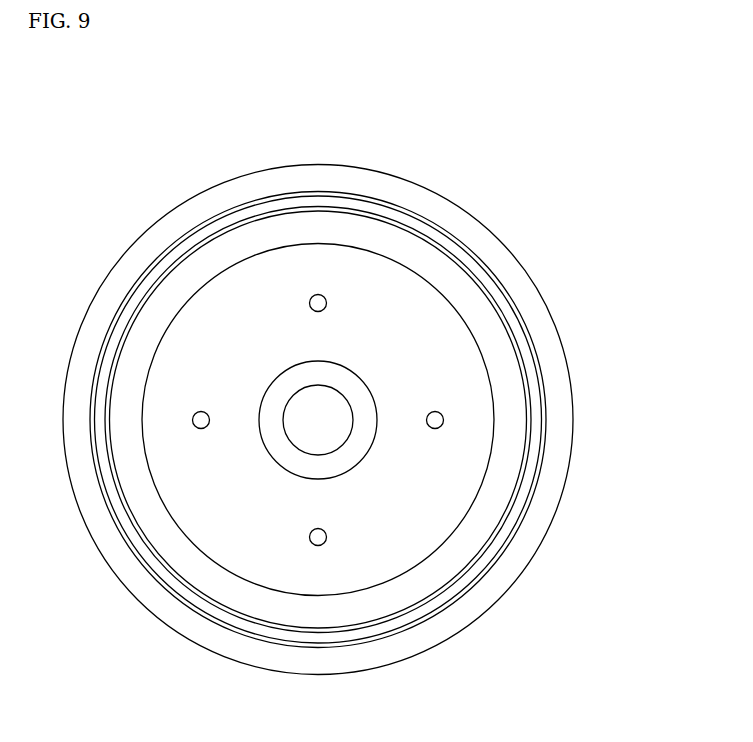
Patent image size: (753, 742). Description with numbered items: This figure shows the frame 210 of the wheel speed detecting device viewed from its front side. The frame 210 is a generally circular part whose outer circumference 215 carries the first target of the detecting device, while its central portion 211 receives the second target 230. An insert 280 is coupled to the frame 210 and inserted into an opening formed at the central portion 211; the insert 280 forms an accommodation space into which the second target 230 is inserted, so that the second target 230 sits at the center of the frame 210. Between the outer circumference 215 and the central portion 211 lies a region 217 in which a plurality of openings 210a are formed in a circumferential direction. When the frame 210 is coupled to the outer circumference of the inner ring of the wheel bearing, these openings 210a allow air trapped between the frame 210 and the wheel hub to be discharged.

The frame 210 is at (104, 132).
The opening 210a is at (323, 296).
The central portion 211 is at (360, 470).
The outer circumference 215 is at (473, 262).
The region 217 is at (420, 475).
The second target 230 is at (312, 413).
The insert 280 is at (357, 388).